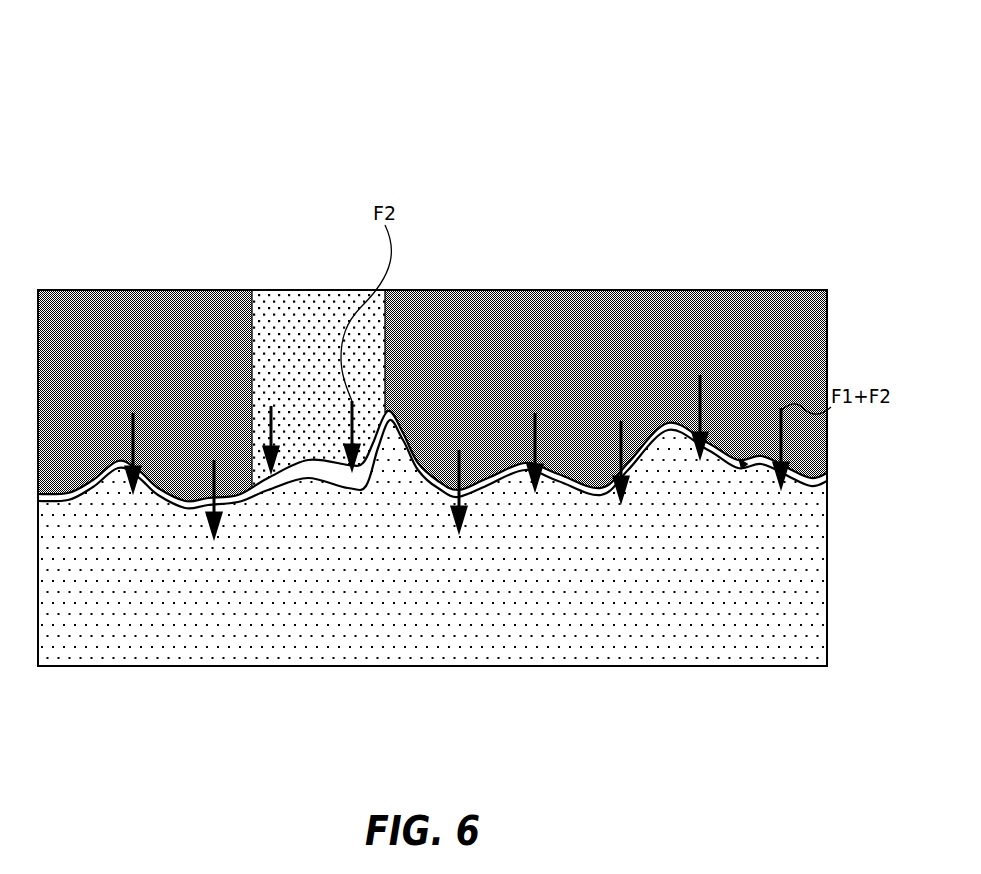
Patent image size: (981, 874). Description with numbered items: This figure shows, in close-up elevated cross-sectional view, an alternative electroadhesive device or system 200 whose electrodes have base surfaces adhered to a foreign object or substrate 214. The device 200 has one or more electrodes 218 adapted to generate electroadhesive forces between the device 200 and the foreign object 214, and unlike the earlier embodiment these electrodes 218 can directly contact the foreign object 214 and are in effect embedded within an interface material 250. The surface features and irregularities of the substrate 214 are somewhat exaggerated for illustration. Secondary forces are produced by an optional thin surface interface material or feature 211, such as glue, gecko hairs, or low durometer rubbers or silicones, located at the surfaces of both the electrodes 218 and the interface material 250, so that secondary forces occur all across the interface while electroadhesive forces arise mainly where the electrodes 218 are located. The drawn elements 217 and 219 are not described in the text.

The electroadhesive device or system 200 is at (180, 76).
The thin surface interface material or feature 211 is at (733, 453).
The foreign object or substrate 214 is at (433, 593).
The interface 217 is at (177, 500).
The electrodes 218 is at (148, 353).
The intervening layer 219 is at (290, 463).
The interface material 250 is at (323, 355).